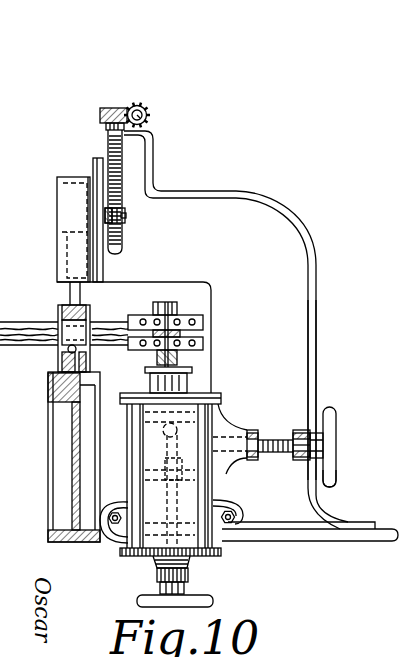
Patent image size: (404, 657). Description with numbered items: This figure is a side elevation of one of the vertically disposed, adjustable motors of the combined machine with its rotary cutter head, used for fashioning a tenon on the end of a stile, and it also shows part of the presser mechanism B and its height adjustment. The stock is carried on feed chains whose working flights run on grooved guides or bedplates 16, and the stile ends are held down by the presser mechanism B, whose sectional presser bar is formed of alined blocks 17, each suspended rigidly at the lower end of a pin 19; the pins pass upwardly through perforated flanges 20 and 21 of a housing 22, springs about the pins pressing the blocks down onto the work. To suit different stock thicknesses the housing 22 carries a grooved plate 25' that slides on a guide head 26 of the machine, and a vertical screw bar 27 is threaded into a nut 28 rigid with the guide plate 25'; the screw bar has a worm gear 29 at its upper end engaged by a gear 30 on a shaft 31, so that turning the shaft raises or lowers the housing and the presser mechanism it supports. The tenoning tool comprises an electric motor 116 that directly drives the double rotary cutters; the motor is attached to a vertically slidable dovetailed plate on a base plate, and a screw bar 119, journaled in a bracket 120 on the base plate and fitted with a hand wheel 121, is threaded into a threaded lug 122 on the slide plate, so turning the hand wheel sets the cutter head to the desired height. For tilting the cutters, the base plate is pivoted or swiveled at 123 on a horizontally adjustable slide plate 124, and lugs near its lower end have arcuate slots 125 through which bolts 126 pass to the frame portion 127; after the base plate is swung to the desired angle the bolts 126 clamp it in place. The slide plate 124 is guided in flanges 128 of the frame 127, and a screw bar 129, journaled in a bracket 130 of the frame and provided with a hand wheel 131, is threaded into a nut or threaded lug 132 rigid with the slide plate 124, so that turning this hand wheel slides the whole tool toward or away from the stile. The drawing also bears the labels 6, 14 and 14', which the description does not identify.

The worm gear 29 is at (100, 112).
The gear 30 is at (147, 108).
The shaft 31 is at (146, 117).
The vertical screw bar 27 is at (117, 160).
The grooved plate 25' is at (75, 215).
The housing 22 is at (58, 178).
The guide head 26 is at (139, 178).
The presser mechanism B is at (63, 213).
The nut 28 is at (126, 216).
The perforated flange 21 is at (62, 234).
The perforated flange 20 is at (56, 277).
The pin 19 is at (70, 297).
The alined block 17 is at (57, 309).
The bearing 6 is at (58, 368).
The grooved guide or bedplate 16 is at (72, 458).
The coupling half 14 is at (191, 334).
The coupling half 14' is at (190, 343).
The pivot 123 is at (231, 394).
The horizontally adjustable slide plate 124 is at (238, 421).
The frame portion 127 is at (308, 381).
The screw bar 129 is at (278, 437).
The hand wheel 131 is at (336, 430).
The bracket 130 is at (316, 455).
The nut or threaded lug 132 is at (336, 473).
The flanges 128 is at (228, 476).
The nut or threaded lug 122 is at (246, 521).
The arcuate slot 125 is at (217, 523).
The bolt 126 is at (234, 531).
The electric motor 116 is at (130, 543).
The screw bar 119 is at (188, 570).
The bracket 120 is at (184, 590).
The hand wheel 121 is at (137, 602).